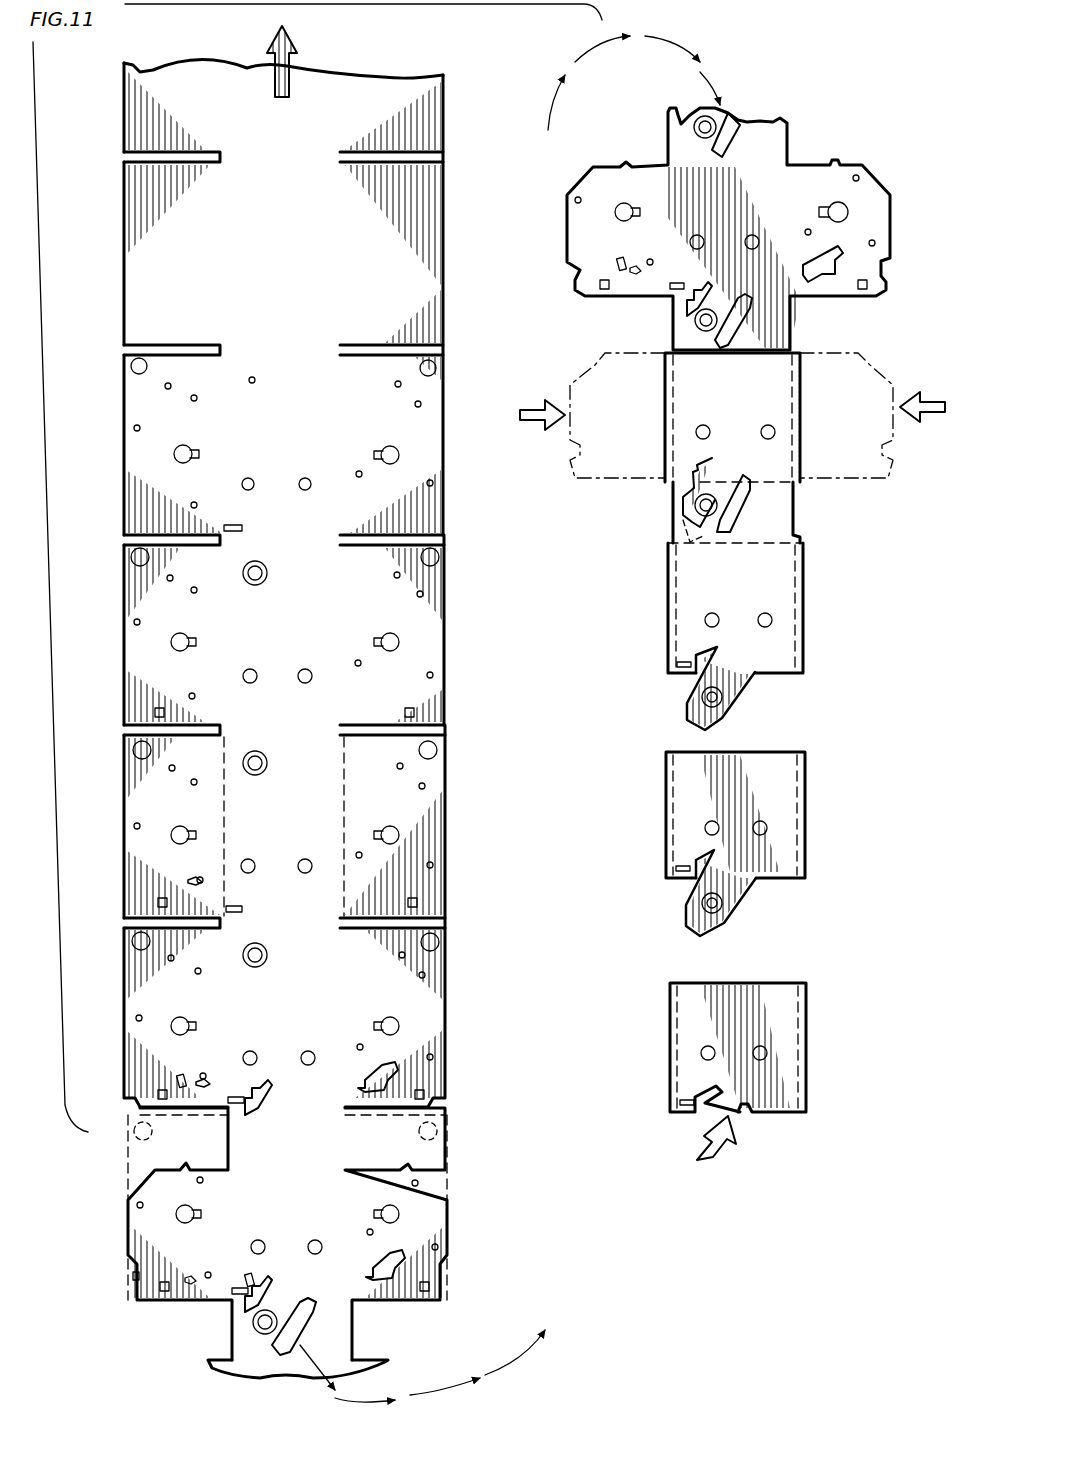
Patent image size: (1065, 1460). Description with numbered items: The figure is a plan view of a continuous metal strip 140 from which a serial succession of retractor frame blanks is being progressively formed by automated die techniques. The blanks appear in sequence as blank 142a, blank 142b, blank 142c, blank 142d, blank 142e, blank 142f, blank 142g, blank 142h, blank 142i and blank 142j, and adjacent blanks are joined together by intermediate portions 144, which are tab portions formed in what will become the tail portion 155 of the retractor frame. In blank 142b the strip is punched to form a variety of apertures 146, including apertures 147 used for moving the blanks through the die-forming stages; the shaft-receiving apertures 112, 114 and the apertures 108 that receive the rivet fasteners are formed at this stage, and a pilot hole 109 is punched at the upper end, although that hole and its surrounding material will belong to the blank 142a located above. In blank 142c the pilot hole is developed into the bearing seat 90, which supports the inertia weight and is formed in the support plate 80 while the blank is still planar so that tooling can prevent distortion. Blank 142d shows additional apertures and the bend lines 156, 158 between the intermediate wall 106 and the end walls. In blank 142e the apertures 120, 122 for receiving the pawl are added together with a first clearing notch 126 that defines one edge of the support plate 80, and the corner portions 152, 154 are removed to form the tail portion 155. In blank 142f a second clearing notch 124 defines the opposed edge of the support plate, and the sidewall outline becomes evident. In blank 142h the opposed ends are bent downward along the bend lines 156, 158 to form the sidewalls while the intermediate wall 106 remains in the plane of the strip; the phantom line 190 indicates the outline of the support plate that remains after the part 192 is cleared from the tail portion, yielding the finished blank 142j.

The metal strip 140 is at (388, 70).
The retractor frame blank 142a is at (444, 192).
The retractor frame blank 142b is at (444, 380).
The retractor frame blank 142c is at (445, 610).
The retractor frame blank 142d is at (446, 815).
The retractor frame blank 142e is at (446, 992).
The retractor frame blank 142f is at (448, 1222).
The retractor frame blank 142g is at (890, 205).
The retractor frame blank 142h is at (800, 412).
The retractor frame blank 142i is at (804, 566).
The retractor frame blank 142j is at (806, 797).
The intermediate portions 144 is at (288, 350).
The apertures 146 is at (168, 390).
The apertures 147 is at (150, 368).
The pilot hole 109 is at (255, 383).
The shaft-receiving aperture 114 is at (186, 447).
The apertures 108 is at (250, 478).
The shaft-receiving aperture 112 is at (400, 452).
The bearing seat 90 is at (258, 585).
The bend line 158 is at (226, 815).
The bend line 156 is at (346, 812).
The aperture 122 is at (184, 1075).
The aperture 120 is at (360, 1085).
The first clearing notch 126 is at (268, 1100).
The corner portion 154 is at (140, 1140).
The corner portion 152 is at (437, 1130).
The tail portion 155 is at (300, 1148).
The second clearing notch 124 is at (300, 1318).
The phantom line 190 is at (665, 518).
The part 192 is at (790, 503).
The support plate 80 is at (715, 520).
The intermediate wall 106 is at (755, 768).